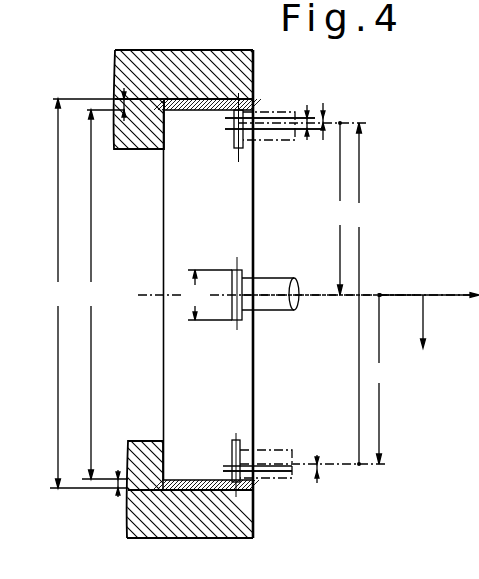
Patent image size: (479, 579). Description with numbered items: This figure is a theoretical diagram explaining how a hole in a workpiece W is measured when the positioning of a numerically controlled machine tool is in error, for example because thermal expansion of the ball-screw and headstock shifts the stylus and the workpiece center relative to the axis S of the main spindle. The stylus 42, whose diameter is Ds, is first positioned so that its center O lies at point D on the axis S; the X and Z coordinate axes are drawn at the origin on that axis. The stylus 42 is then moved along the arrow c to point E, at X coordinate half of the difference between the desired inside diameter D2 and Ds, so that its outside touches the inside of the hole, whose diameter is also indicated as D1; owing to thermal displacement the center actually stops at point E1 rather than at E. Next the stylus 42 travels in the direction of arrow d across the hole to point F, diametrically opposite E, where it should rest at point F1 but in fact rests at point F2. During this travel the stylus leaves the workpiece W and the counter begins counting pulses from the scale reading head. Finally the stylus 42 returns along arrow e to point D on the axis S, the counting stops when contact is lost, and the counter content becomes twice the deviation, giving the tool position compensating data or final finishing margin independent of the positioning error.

The workpiece W is at (182, 54).
The stylus 42 is at (281, 286).
The point F is at (234, 125).
The point F1 is at (237, 129).
The point F2 is at (238, 118).
The point E is at (233, 468).
The point E1 is at (230, 469).
The stylus diameter Ds is at (207, 295).
The inside diameter D1 is at (105, 294).
The desired inside diameter D2 is at (87, 293).
The axis of the main spindle S is at (397, 295).
The X axis X is at (422, 336).
The Z axis Z is at (451, 287).
The arrow c is at (378, 378).
The arrow d is at (359, 294).
The arrow e is at (338, 208).